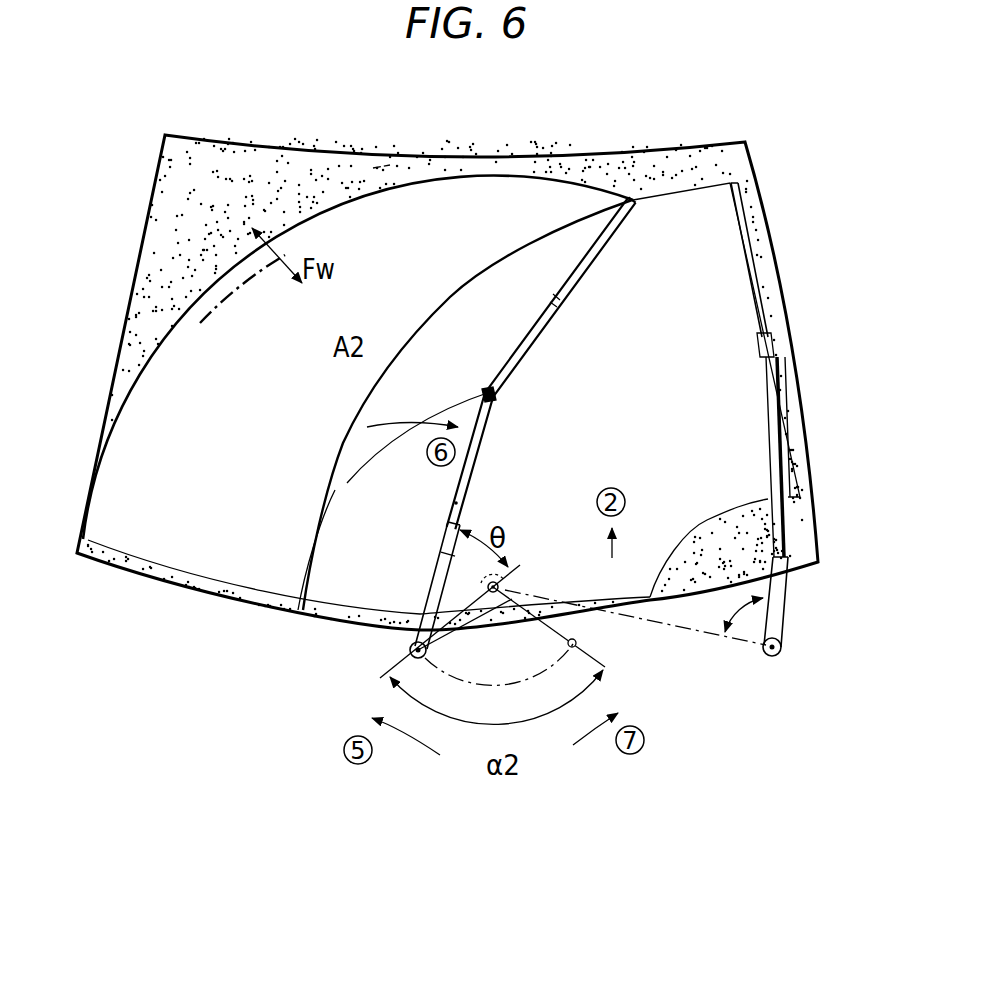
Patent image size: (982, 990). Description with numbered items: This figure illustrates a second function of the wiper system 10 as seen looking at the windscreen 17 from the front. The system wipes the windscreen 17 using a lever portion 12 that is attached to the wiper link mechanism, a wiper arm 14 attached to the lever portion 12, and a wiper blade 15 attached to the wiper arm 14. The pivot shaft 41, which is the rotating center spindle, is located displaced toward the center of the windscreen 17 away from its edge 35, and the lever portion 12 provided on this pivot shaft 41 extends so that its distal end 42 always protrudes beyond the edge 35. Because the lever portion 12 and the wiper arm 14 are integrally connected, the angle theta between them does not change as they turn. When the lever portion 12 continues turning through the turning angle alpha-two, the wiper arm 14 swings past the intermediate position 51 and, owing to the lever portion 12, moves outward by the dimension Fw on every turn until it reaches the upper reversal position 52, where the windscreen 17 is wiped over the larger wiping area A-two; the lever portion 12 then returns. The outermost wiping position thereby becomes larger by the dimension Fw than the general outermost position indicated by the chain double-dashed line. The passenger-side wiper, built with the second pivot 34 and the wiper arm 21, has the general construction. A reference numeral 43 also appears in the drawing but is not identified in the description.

The wiper system 10 is at (318, 706).
The lever portion 12 is at (456, 643).
The wiper arm 14 is at (440, 556).
The wiper blade 15 is at (585, 299).
The windscreen 17 is at (162, 541).
The wiper arm for a front seat passenger 21 is at (788, 605).
The second pivot 34 is at (779, 660).
The edge 35 is at (567, 605).
The pivot shaft 41 is at (507, 573).
The distal end 42 is at (410, 652).
The reversal position line 43 is at (281, 588).
The intermediate position 51 is at (357, 500).
The upper reversal position 52 is at (457, 504).